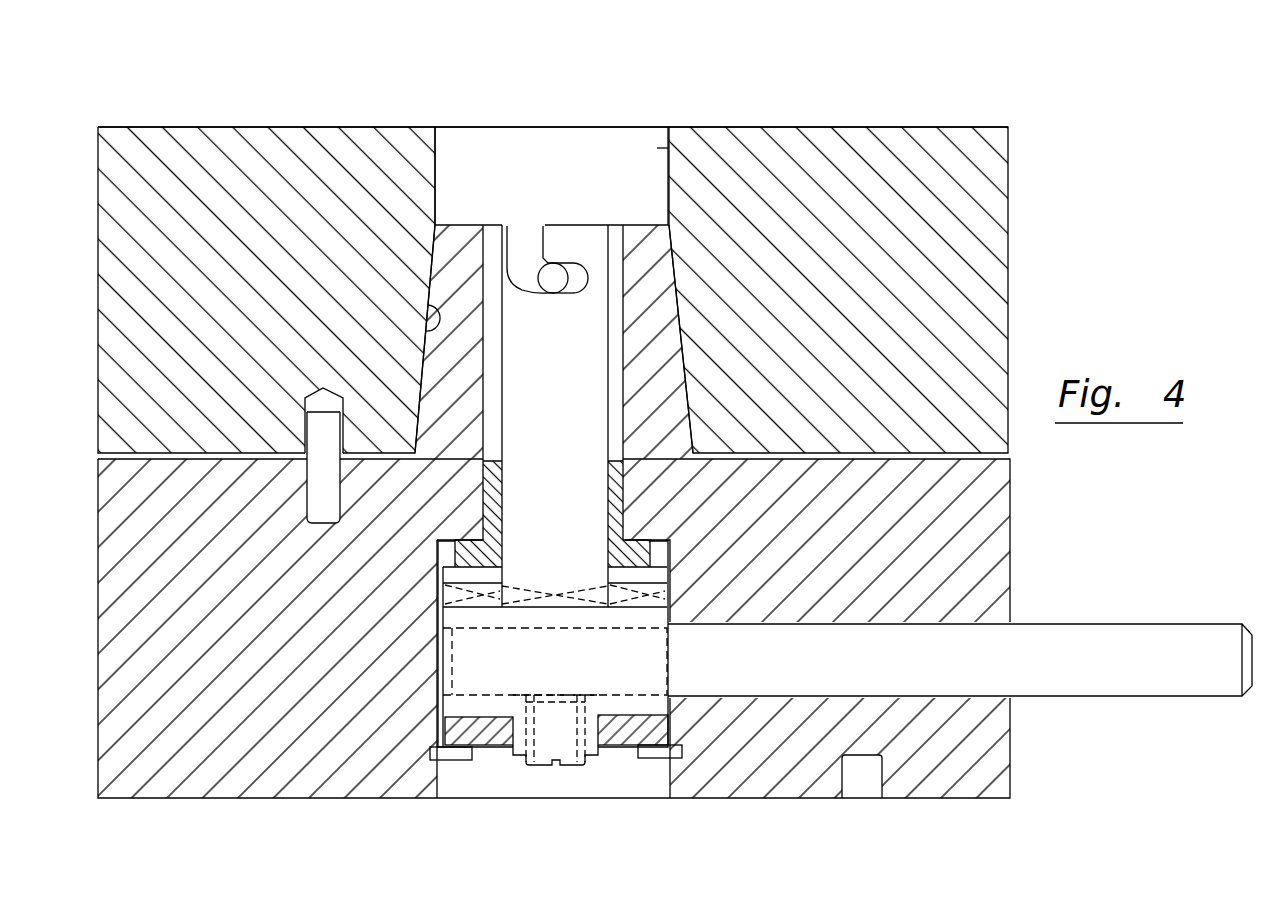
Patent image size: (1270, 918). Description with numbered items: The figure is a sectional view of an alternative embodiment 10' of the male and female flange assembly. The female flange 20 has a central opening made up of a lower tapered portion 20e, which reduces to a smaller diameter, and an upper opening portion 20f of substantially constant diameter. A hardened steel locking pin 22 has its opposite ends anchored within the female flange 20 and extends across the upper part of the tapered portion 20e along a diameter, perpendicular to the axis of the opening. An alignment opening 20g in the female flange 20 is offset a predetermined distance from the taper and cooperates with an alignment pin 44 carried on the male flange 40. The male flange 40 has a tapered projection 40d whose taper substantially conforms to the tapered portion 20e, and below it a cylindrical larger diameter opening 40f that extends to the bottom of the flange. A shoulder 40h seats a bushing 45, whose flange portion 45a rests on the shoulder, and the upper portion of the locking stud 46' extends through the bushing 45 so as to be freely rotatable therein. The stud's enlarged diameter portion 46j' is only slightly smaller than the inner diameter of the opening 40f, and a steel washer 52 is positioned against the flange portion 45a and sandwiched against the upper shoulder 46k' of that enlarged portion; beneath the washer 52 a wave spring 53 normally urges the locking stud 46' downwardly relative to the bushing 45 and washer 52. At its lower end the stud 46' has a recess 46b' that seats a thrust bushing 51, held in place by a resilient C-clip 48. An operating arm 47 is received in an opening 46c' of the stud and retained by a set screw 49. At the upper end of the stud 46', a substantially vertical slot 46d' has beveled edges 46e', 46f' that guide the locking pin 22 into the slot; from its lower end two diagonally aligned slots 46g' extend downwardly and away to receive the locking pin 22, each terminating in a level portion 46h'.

The embodiment 10' is at (553, 103).
The female flange 20 is at (327, 118).
The lower tapered portion 20e is at (427, 305).
The upper opening portion 20f is at (667, 148).
The alignment opening 20g is at (303, 412).
The locking pin 22 is at (533, 265).
The male flange 40 is at (262, 800).
The tapered projection 40d is at (690, 321).
The larger diameter opening 40f is at (657, 540).
The shoulder 40h is at (683, 754).
The alignment pin 44 is at (307, 490).
The bushing 45 is at (485, 503).
The flange portion 45a is at (462, 545).
The locking stud 46' is at (553, 416).
The recess 46b' is at (637, 786).
The opening 46c' is at (555, 614).
The vertically aligned slot 46d' is at (534, 179).
The beveled edge 46e' is at (487, 179).
The beveled edge 46f' is at (588, 188).
The diagonally aligned slot 46g' is at (446, 319).
The level portion 46h' is at (572, 329).
The enlarged diameter portion 46j' is at (487, 644).
The upper shoulder 46k' is at (621, 579).
The operating arm 47 is at (1128, 697).
The C-clip 48 is at (450, 759).
The set screw 49 is at (568, 767).
The thrust bushing 51 is at (497, 747).
The washer 52 is at (460, 573).
The wave spring 53 is at (462, 590).